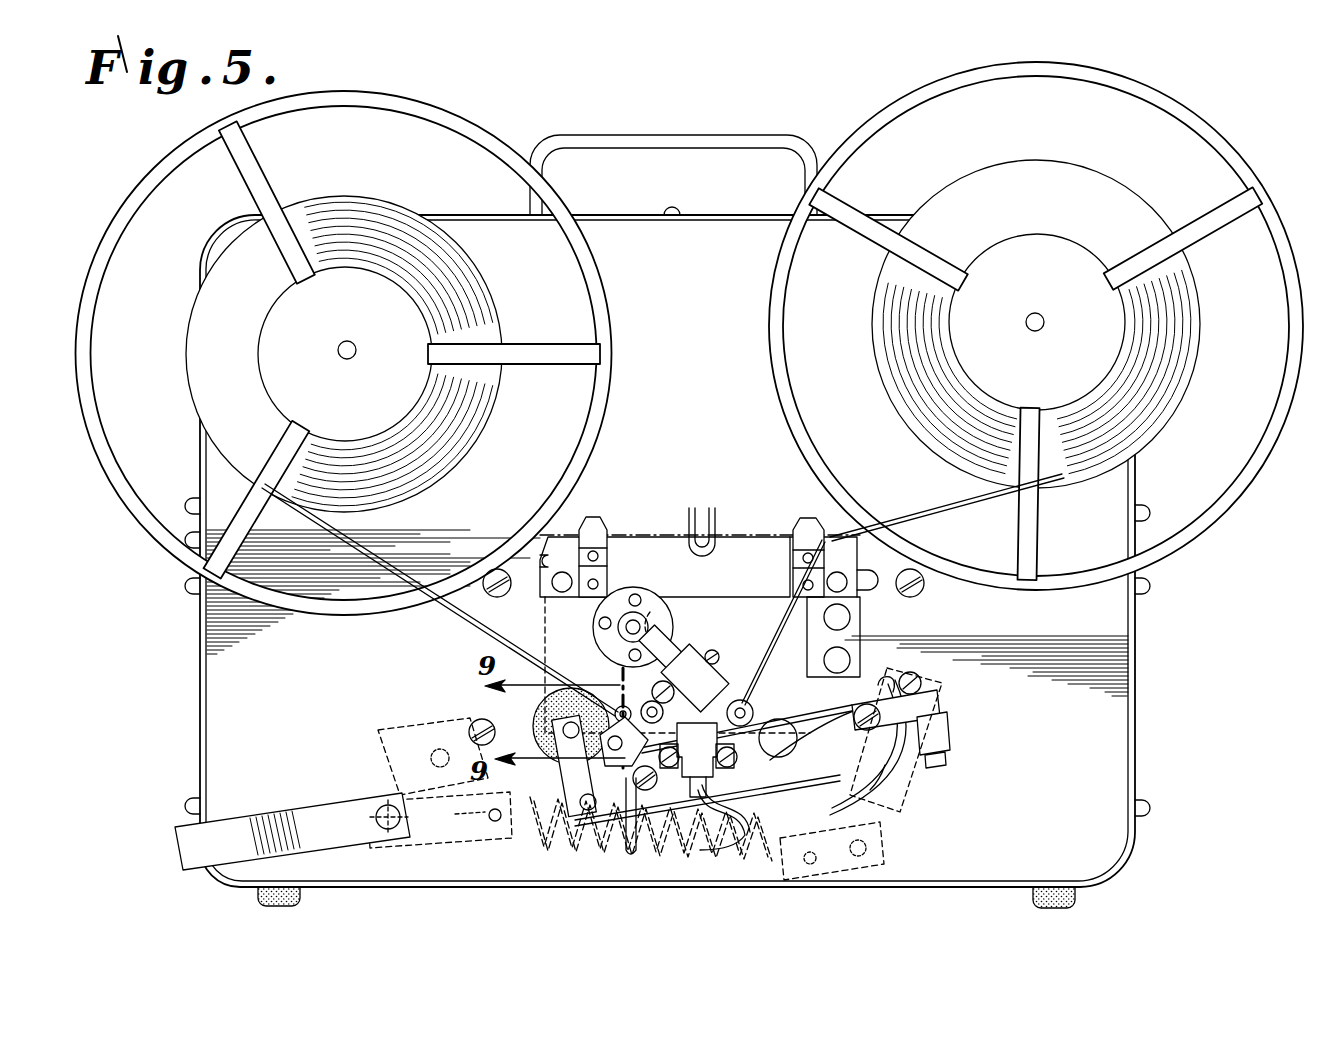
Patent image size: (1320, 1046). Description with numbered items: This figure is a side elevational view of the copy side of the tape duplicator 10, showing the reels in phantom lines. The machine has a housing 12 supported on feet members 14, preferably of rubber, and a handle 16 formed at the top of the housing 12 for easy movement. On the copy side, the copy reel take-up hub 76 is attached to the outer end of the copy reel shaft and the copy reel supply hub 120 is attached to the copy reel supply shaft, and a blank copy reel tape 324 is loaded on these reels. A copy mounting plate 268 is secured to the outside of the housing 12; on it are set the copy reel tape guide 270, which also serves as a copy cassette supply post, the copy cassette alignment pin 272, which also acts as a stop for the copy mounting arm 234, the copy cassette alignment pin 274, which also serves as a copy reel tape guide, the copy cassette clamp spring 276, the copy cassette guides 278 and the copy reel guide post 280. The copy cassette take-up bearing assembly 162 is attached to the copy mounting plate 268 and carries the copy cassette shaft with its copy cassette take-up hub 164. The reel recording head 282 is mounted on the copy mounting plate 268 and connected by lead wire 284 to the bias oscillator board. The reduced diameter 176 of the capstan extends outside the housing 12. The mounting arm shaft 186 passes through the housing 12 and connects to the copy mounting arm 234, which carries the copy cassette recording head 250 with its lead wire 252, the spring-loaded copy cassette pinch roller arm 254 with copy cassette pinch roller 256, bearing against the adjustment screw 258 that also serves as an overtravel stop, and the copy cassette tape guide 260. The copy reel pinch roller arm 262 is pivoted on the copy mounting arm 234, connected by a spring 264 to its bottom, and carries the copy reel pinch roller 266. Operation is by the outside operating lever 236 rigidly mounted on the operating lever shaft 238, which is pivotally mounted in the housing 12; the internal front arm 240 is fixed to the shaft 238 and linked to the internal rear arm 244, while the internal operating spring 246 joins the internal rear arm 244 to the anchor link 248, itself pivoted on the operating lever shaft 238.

The tape duplicator 10 is at (125, 652).
The housing 12 is at (213, 706).
The feet members 14 is at (262, 896).
The handle 16 is at (680, 140).
The copy reel take-up hub 76 is at (356, 347).
The copy reel supply hub 120 is at (1028, 330).
The copy cassette take-up bearing assembly 162 is at (600, 609).
The copy cassette take-up hub 164 is at (618, 630).
The reduced diameter of capstan 176 is at (621, 706).
The mounting arm shaft 186 is at (942, 733).
The copy mounting arm 234 is at (890, 772).
The outside operating lever 236 is at (198, 845).
The operating lever shaft 238 is at (360, 812).
The internal front arm 240 is at (385, 770).
The internal rear arm 244 is at (905, 808).
The internal operating spring 246 is at (560, 842).
The anchor link 248 is at (428, 838).
The copy cassette recording head 250 is at (782, 770).
The lead wire 252 is at (878, 822).
The copy cassette pinch roller arm 254 is at (628, 800).
The copy cassette pinch roller 256 is at (503, 736).
The adjustment screw 258 is at (657, 825).
The copy cassette tape guide 260 is at (780, 718).
The copy reel pinch roller arm 262 is at (575, 786).
The spring 264 is at (733, 786).
The copy reel pinch roller 266 is at (555, 705).
The copy mounting plate 268 is at (735, 610).
The copy reel tape guide 270 is at (860, 627).
The copy cassette alignment pin 272 is at (744, 700).
The copy cassette alignment pin 274 is at (648, 725).
The copy cassette clamp spring 276 is at (702, 507).
The copy cassette guides 278 is at (592, 520).
The copy reel guide post 280 is at (845, 568).
The reel recording head 282 is at (692, 662).
The lead wire 284 is at (650, 610).
The blank copy reel tape 324 is at (438, 612).